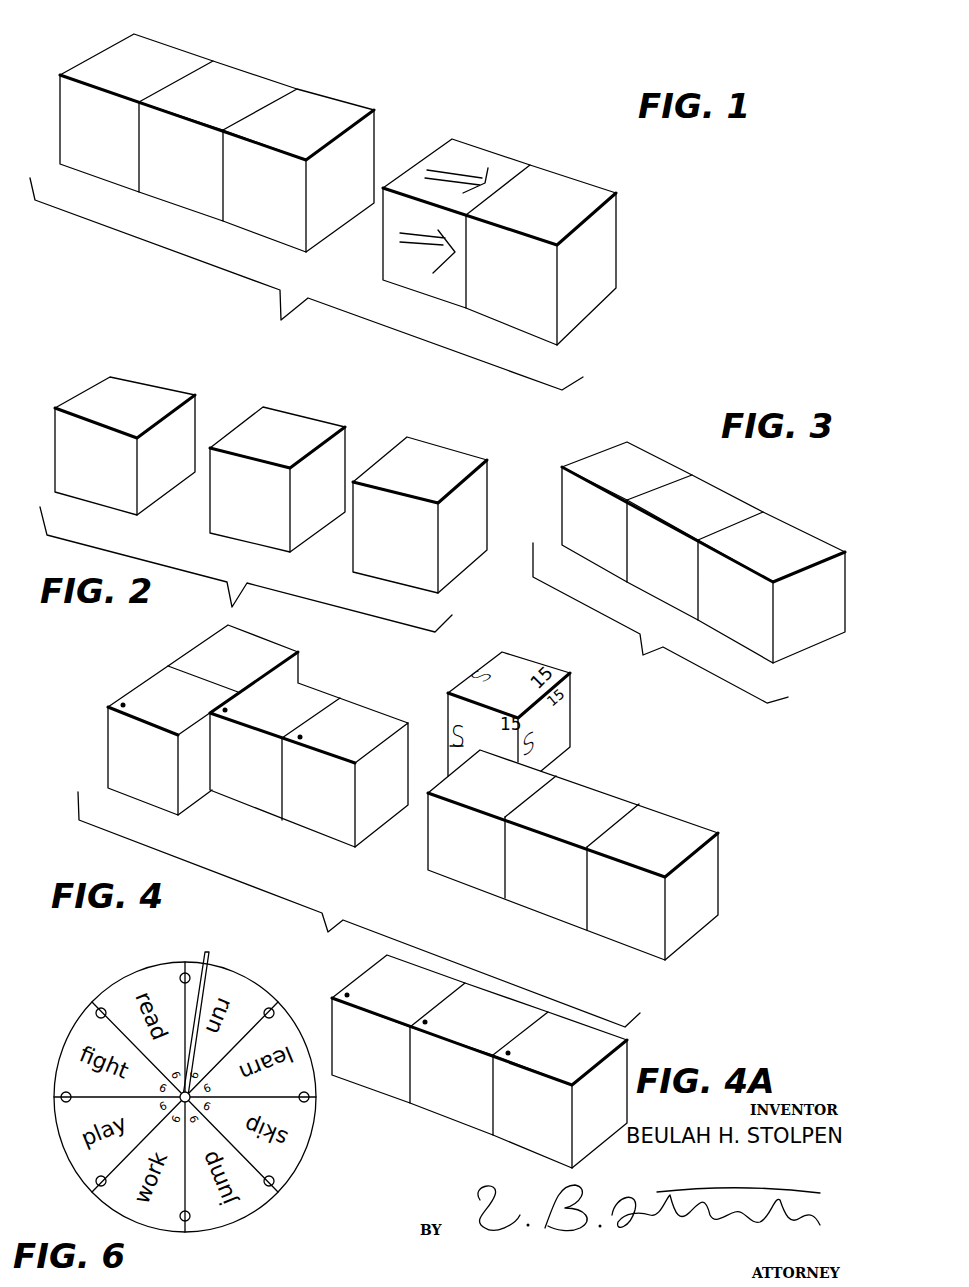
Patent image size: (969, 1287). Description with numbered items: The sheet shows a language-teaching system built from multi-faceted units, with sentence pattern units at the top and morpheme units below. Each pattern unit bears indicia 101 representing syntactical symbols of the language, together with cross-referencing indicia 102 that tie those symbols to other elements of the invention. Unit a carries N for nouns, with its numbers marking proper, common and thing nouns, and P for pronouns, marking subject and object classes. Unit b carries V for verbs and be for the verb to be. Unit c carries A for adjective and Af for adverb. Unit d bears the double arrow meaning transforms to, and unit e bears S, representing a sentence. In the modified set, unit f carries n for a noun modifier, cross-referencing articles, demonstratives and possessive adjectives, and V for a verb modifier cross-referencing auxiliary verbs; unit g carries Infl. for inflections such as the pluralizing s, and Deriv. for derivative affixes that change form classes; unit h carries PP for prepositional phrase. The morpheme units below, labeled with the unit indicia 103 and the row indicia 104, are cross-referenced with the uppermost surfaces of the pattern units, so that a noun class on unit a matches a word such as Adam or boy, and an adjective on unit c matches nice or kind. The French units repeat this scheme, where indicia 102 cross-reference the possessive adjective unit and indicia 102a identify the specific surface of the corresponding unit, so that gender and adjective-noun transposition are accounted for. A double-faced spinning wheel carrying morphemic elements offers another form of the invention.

In FIG. 1, the indicia representing syntactical symbols 101 is at (103, 57).
In FIG. 1, the cross-referencing indicia 102 is at (160, 40).
In FIG. 4A, the cross-referencing indicia 102 is at (368, 965).
In FIG. 4, the surface cross-reference indicia 102a is at (142, 690).
In FIG. 4A, the surface cross-reference indicia 102a is at (368, 1085).
In FIG. 3, the noun cube 103 is at (607, 447).
In FIG. 3, the row of sentence cubes 104 is at (677, 433).
In FIG. 1, the noun and pronoun unit a is at (120, 177).
In FIG. 3, the noun and pronoun unit a is at (597, 560).
In FIG. 1, the verb unit b is at (190, 198).
In FIG. 3, the verb unit b is at (660, 597).
In FIG. 1, the adjective and adverb unit c is at (265, 228).
In FIG. 3, the adjective and adverb unit c is at (735, 640).
In FIG. 1, the transforms-to symbol unit d is at (432, 287).
In FIG. 1, the sentence symbol unit e is at (515, 318).
In FIG. 2, the noun modifier and verb modifier unit f is at (100, 497).
In FIG. 2, the inflection and derivative unit g is at (243, 533).
In FIG. 2, the prepositional phrase unit h is at (395, 575).
In FIG. 4, the prepositional phrase unit h is at (648, 960).